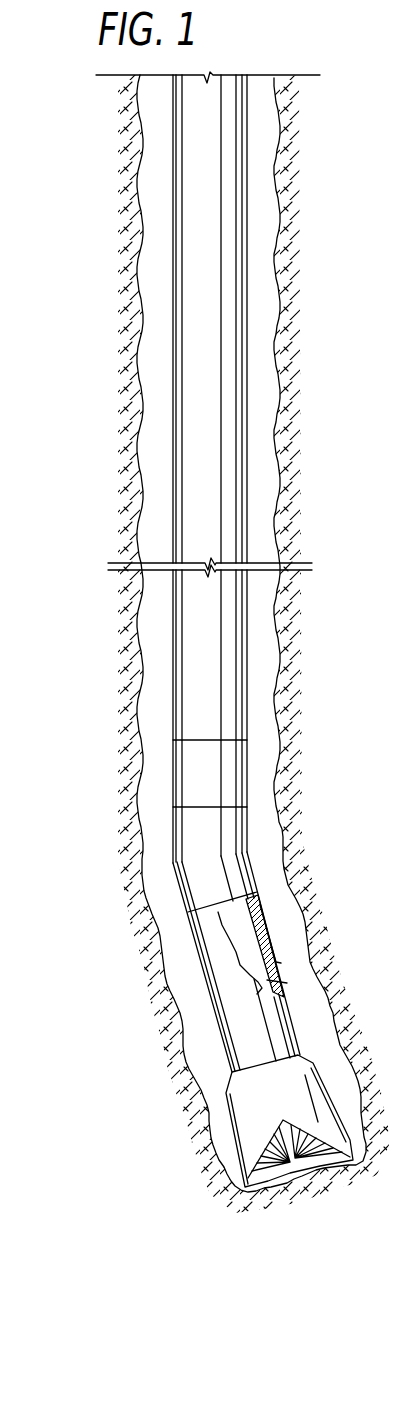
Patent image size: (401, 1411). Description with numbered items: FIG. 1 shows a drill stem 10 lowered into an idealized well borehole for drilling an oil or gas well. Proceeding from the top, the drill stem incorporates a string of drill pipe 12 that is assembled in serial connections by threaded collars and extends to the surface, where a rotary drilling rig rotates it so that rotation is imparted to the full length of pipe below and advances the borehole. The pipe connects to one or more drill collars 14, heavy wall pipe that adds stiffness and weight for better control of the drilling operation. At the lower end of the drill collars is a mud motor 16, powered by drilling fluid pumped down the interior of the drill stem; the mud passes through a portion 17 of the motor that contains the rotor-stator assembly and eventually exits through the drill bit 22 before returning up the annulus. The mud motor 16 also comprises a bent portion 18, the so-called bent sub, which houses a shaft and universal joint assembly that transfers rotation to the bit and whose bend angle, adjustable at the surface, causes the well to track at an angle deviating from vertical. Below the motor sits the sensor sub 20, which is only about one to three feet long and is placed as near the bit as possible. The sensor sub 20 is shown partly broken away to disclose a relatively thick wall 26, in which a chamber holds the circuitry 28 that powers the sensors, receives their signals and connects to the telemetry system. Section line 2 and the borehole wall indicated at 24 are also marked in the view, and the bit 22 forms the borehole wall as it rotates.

The section line 2- 2 is at (203, 1042).
The drill stem 10 is at (327, 388).
The pipe 12 is at (243, 203).
The drill collars 14 is at (230, 651).
The mud motor 16 is at (84, 750).
The portion of the mud motor 17 is at (230, 777).
The bent portion 18 is at (232, 852).
The sensor sub 20 is at (210, 1000).
The drill bit 22 is at (327, 1177).
The borehole wall formation 24 is at (296, 881).
The thick wall 26 is at (287, 985).
The circuitry 28 is at (270, 913).